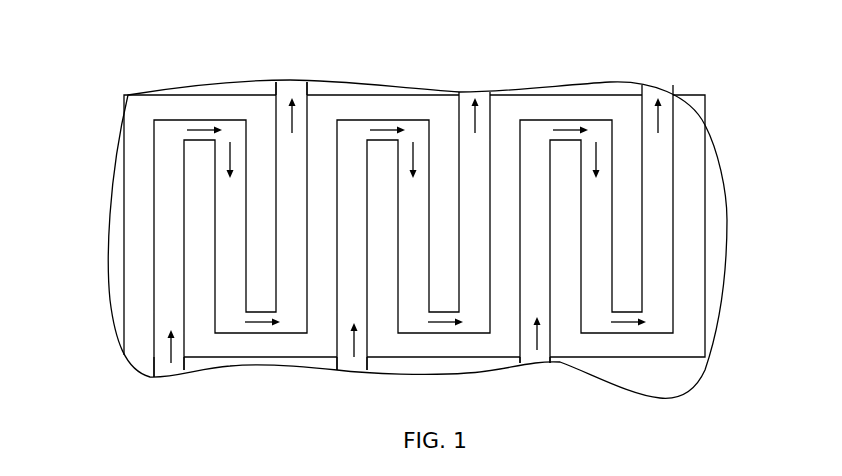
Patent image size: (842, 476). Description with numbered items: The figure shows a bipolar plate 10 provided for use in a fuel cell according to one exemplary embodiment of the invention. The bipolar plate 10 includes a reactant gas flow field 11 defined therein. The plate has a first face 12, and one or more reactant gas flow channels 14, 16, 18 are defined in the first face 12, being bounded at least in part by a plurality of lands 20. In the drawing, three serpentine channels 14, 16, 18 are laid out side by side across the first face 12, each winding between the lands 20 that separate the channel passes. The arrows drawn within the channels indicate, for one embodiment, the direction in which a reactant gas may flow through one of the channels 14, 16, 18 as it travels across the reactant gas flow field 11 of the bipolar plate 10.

The bipolar plate 10 is at (738, 118).
The reactant gas flow field 11 is at (296, 70).
The first face 12 is at (656, 385).
The reactant gas flow channel 14 is at (152, 310).
The reactant gas flow channel 16 is at (336, 329).
The reactant gas flow channel 18 is at (518, 328).
The lands 20 is at (567, 150).